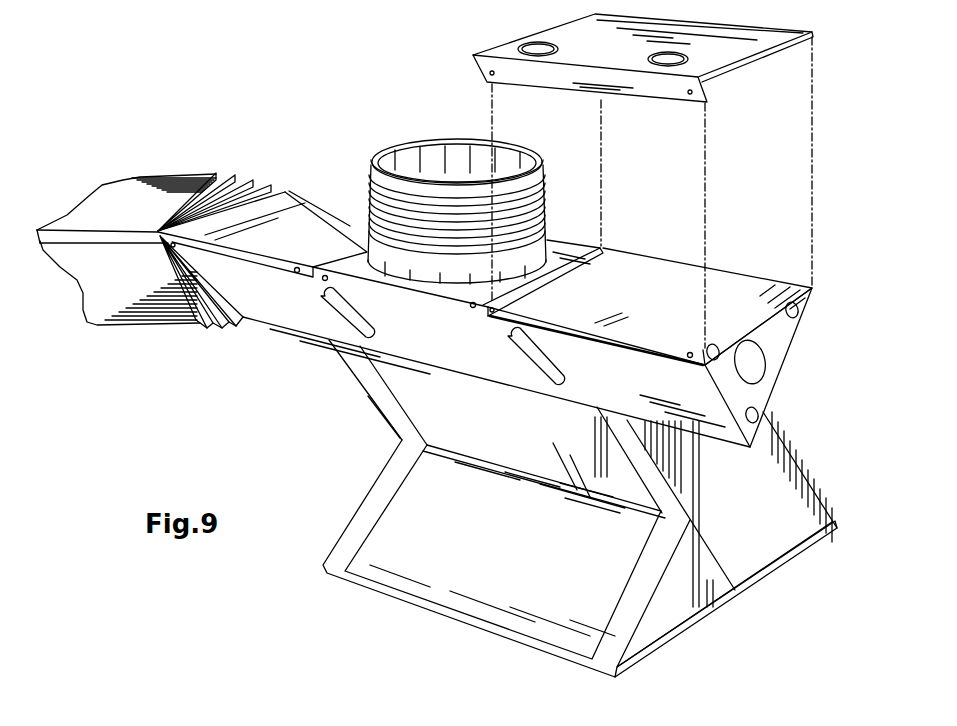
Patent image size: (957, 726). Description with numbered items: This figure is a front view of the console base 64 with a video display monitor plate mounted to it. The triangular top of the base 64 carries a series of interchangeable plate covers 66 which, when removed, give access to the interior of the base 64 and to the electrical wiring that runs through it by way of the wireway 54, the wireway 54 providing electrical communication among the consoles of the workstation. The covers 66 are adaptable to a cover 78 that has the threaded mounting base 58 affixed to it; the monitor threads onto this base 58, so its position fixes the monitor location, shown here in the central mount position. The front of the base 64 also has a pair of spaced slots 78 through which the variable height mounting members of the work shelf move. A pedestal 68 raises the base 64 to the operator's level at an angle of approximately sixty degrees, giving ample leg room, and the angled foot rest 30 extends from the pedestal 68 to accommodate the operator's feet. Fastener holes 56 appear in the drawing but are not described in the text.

The foot rest 30 is at (577, 584).
The wireway 54 is at (765, 360).
The fastener holes 56 is at (717, 346).
The threaded mounting base 58 is at (371, 185).
The console base 64 is at (614, 389).
The plate covers 66 is at (308, 250).
The pedestal 68 is at (759, 522).
The cover with threaded mounting base / spaced slots 78 is at (558, 255).